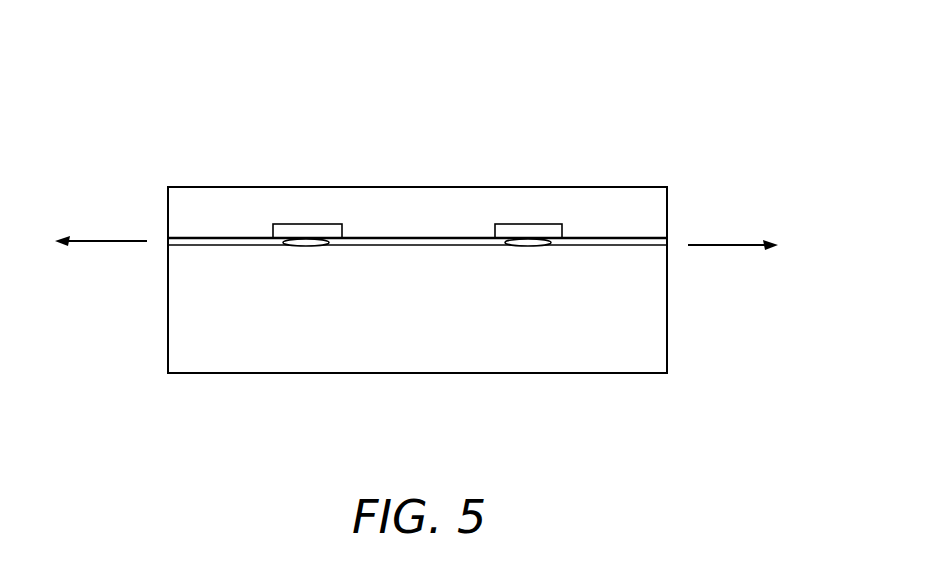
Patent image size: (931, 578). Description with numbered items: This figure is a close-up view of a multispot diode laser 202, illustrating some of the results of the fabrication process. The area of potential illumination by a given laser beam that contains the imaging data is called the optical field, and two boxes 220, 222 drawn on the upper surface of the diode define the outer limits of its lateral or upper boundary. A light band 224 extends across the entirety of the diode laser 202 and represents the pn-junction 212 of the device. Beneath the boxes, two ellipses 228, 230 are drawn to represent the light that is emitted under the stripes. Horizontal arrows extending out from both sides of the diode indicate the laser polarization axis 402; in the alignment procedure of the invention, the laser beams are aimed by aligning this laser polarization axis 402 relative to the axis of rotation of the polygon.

The diode laser 202 is at (599, 81).
The pn-junction 212 is at (668, 243).
The box 220 is at (288, 228).
The box 222 is at (507, 228).
The light band 224 is at (617, 238).
The ellipse 228 is at (300, 246).
The ellipse 230 is at (535, 243).
The laser polarization axis 402 is at (82, 241).